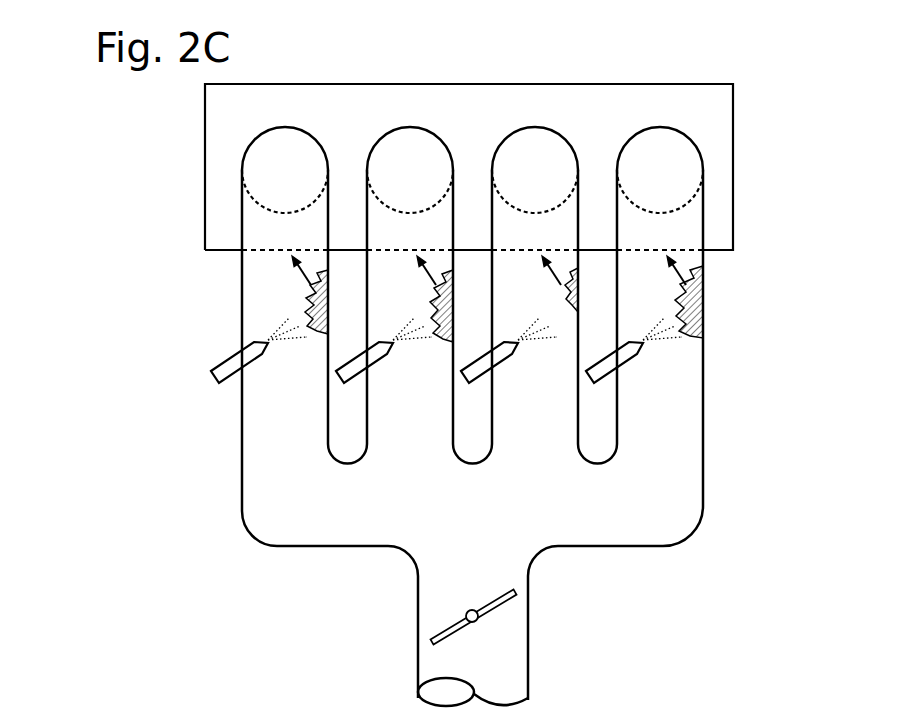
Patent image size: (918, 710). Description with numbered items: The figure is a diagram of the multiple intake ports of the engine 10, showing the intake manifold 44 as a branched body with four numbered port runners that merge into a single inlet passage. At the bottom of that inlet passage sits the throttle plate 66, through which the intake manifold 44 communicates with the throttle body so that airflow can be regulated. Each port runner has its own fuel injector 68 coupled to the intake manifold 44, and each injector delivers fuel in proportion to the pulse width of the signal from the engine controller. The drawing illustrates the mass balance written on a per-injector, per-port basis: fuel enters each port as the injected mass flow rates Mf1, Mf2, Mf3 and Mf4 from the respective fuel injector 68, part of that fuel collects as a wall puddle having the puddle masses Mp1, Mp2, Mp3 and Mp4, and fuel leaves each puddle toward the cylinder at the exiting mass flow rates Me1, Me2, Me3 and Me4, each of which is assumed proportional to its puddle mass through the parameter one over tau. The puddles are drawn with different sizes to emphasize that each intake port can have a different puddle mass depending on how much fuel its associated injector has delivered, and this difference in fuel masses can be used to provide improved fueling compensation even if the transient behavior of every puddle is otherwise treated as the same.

The engine 10 is at (722, 67).
The intake manifold 44 is at (489, 554).
The throttle plate 66 is at (450, 626).
The fuel injector 68 is at (248, 360).
The mass flow rate of fuel exiting the puddle at the first port Me1 is at (314, 268).
The mass flow rate of fuel exiting the puddle at the second port Me2 is at (439, 268).
The mass flow rate of fuel exiting the puddle at the third port Me3 is at (564, 268).
The mass flow rate of fuel exiting the puddle at the fourth port Me4 is at (689, 268).
The mass of fuel in the puddle at the first port Mp1 is at (309, 298).
The mass of fuel in the puddle at the second port Mp2 is at (434, 298).
The mass of fuel in the puddle at the third port Mp3 is at (567, 298).
The mass of fuel in the puddle at the fourth port Mp4 is at (680, 300).
The mass flow rate of fuel injected at the first port Mf1 is at (288, 342).
The mass flow rate of fuel injected at the second port Mf2 is at (413, 342).
The mass flow rate of fuel injected at the third port Mf3 is at (538, 342).
The mass flow rate of fuel injected at the fourth port Mf4 is at (663, 342).